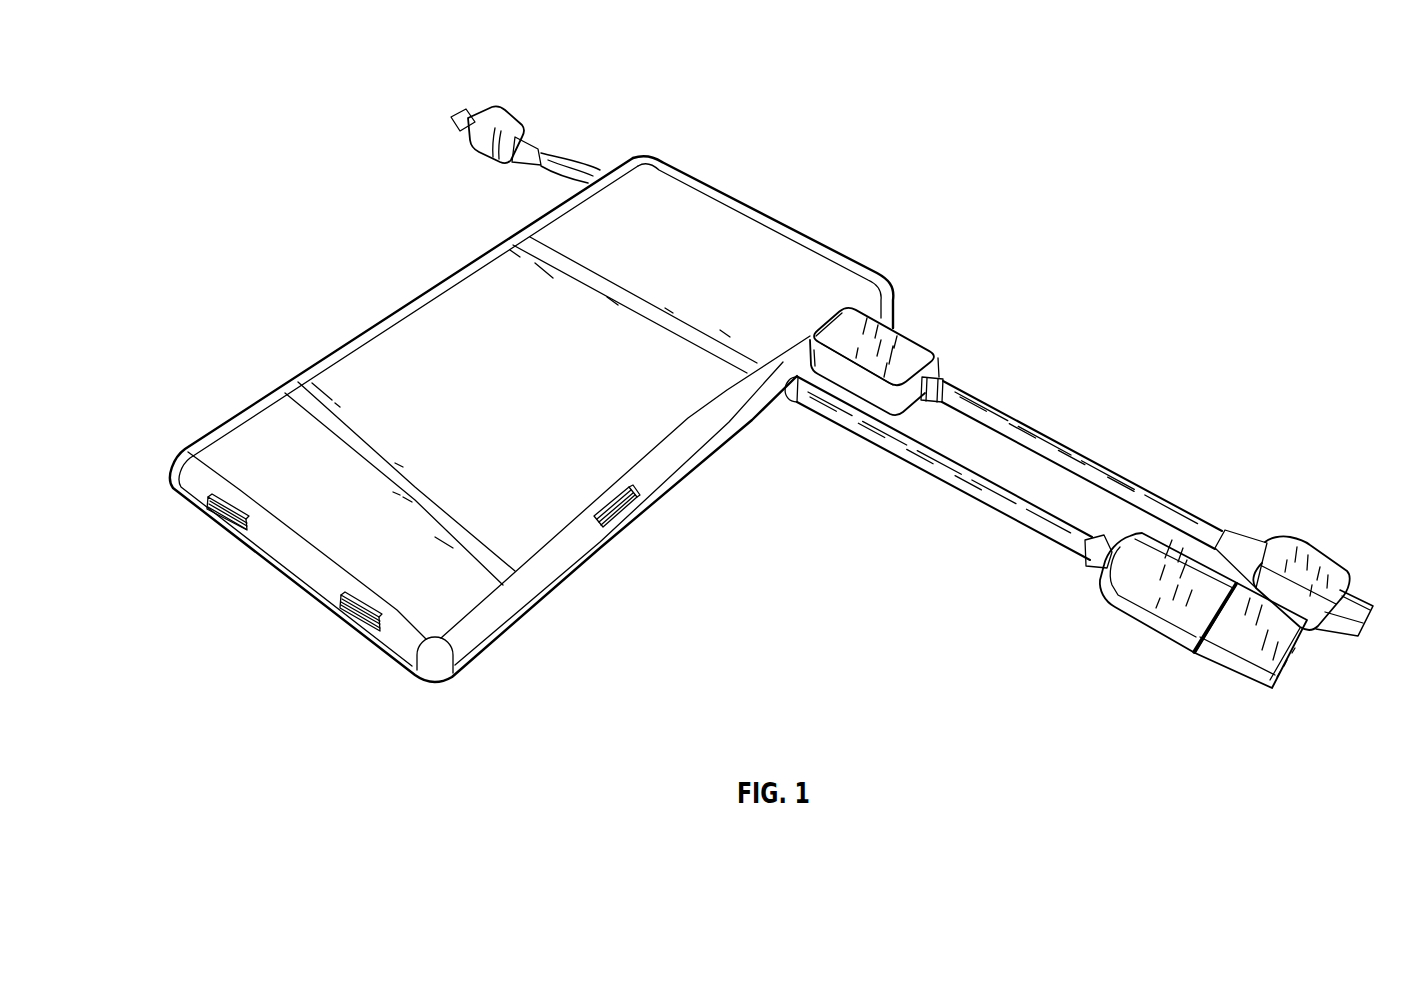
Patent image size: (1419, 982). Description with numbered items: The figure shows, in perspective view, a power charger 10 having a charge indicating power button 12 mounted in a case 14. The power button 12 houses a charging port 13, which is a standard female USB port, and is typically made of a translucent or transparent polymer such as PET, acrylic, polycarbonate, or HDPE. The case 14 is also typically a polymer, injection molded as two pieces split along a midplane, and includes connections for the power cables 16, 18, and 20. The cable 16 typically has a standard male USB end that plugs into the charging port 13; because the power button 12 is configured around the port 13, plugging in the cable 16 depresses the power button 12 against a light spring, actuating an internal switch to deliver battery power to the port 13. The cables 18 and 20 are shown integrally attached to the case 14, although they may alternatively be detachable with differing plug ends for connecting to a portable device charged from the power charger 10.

The power charger 10 is at (392, 96).
The charge indicating power button 12 is at (874, 292).
The charging port 13 is at (807, 343).
The case 14 is at (551, 384).
The cable 16 is at (1067, 447).
The cable 18 is at (508, 110).
The cable 20 is at (1000, 510).